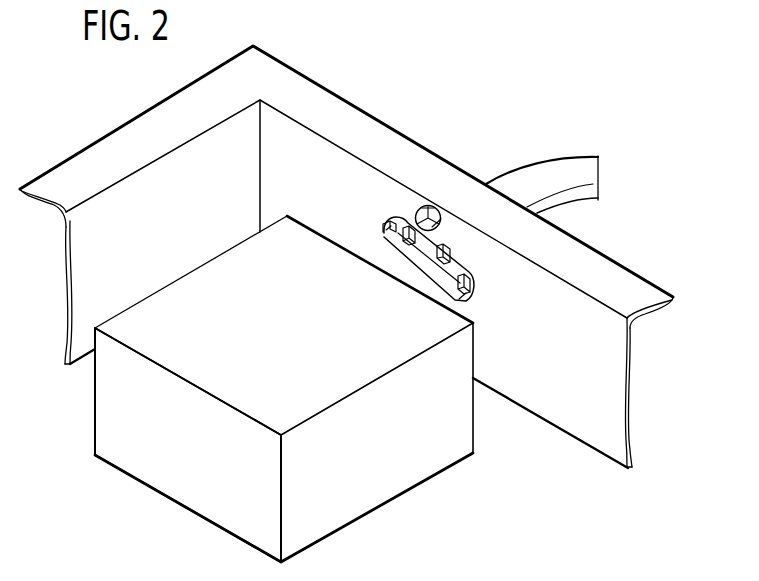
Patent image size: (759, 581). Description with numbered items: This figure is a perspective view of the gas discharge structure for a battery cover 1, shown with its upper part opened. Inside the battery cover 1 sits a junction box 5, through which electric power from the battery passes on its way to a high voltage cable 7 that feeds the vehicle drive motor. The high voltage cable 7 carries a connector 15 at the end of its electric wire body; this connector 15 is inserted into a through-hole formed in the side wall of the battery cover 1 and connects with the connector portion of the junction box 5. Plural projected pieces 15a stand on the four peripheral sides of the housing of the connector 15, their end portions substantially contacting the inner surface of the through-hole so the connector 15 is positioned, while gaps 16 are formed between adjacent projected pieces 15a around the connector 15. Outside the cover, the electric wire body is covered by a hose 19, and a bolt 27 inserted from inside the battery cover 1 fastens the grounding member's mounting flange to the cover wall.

The battery cover 1 is at (127, 135).
The junction box 5 is at (367, 492).
The high voltage cable 7 is at (578, 156).
The connector 15 is at (384, 238).
The projected pieces 15a is at (392, 224).
The gaps 16 is at (389, 226).
The hose 19 is at (556, 173).
The bolt 27 is at (438, 205).